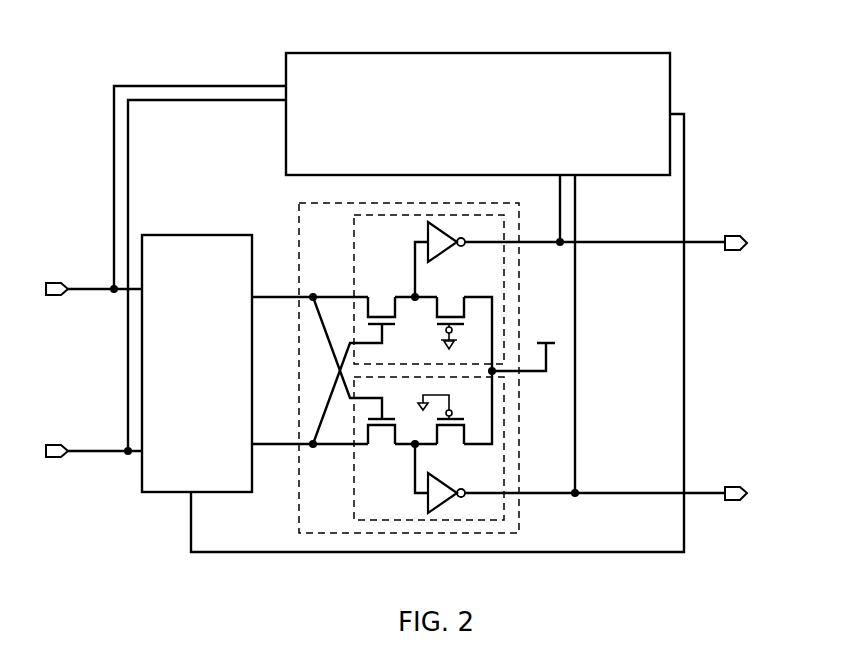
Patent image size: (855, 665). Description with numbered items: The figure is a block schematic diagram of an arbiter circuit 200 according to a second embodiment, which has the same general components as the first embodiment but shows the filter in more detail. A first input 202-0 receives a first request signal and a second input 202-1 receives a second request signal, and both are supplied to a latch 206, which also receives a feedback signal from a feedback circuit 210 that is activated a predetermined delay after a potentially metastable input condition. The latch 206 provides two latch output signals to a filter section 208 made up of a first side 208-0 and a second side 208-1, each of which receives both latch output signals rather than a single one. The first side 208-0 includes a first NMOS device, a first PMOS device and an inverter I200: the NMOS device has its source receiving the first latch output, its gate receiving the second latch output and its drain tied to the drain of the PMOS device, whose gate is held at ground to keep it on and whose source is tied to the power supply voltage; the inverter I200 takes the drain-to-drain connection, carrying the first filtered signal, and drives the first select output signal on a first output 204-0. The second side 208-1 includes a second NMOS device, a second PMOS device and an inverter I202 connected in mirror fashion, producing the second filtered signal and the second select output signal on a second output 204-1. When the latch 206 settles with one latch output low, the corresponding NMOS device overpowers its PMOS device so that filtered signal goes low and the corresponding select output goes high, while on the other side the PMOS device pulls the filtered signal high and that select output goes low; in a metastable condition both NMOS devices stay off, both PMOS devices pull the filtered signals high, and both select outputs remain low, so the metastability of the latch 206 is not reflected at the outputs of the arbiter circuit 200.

The arbiter circuit 200 is at (735, 56).
The first input 202-0 is at (55, 295).
The second input 202-1 is at (50, 445).
The first output 204-0 is at (740, 250).
The second output 204-1 is at (740, 487).
The latch 206 is at (197, 363).
The filter section 208 is at (520, 282).
The first side 208-0 is at (505, 300).
The second side 208-1 is at (505, 460).
The feedback circuit 210 is at (478, 114).
The inverter I200 is at (445, 230).
The inverter I202 is at (440, 500).